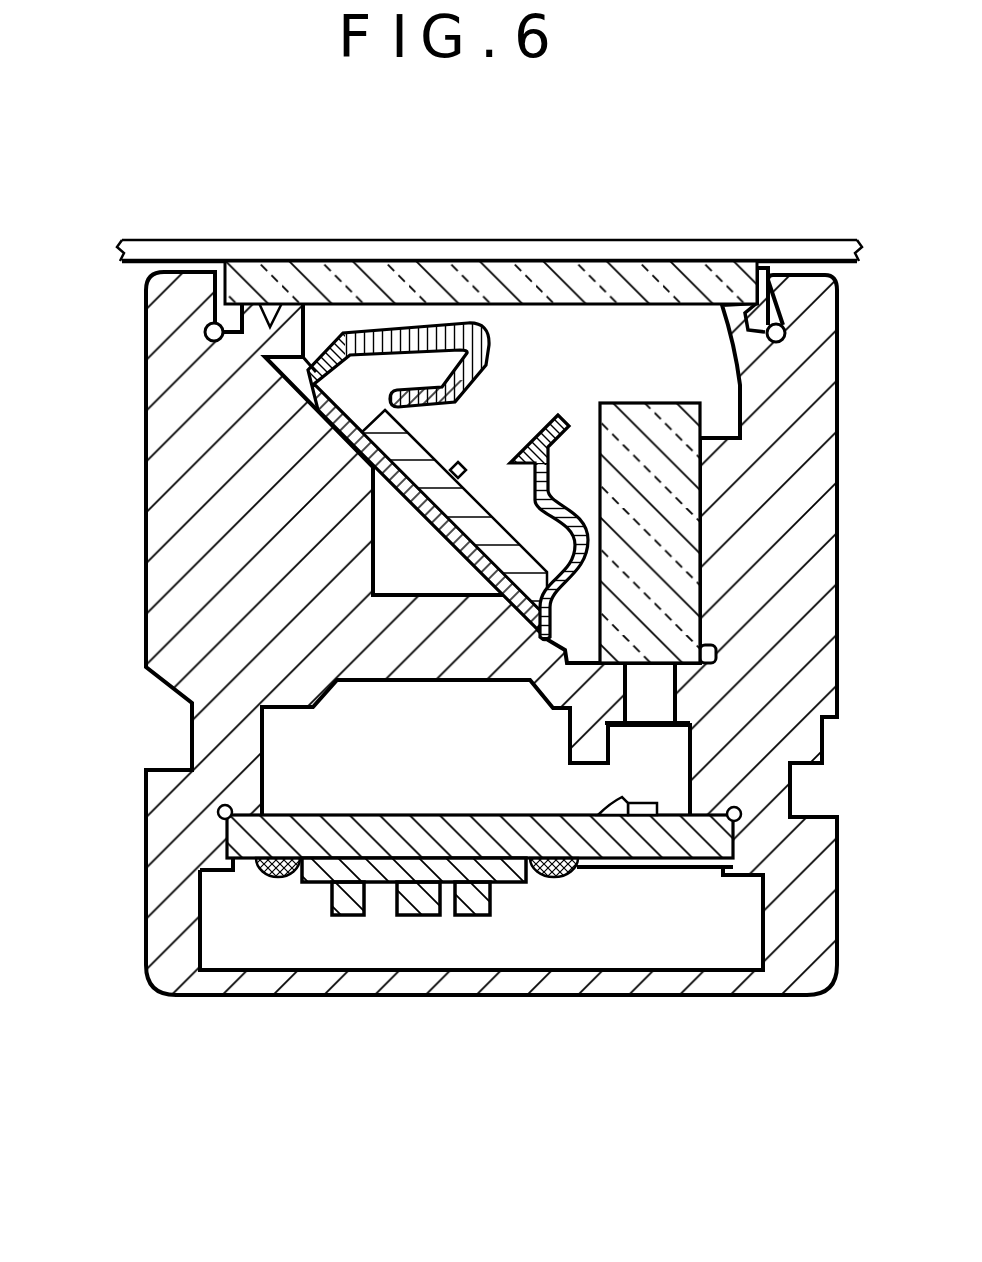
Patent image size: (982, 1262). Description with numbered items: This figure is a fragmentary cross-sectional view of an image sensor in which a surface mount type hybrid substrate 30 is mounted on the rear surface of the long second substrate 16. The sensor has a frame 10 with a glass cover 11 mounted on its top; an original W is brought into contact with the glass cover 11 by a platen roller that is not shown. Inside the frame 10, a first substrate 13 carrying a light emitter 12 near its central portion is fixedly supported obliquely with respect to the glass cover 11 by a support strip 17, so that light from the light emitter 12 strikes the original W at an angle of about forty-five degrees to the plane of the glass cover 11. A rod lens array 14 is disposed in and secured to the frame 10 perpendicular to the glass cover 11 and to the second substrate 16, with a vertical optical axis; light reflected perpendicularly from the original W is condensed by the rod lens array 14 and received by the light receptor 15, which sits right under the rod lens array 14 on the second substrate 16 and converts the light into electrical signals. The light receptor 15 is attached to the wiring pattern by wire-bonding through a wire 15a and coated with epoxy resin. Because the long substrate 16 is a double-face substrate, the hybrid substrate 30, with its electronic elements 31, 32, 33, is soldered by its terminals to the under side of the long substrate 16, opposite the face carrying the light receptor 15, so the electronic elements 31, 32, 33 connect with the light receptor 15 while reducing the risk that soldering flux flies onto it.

The frame 10 is at (800, 383).
The glass cover 11 is at (271, 292).
The original W is at (467, 257).
The light emitter 12 is at (464, 463).
The first substrate 13 is at (363, 397).
The rod lens array 14 is at (632, 437).
The light receptor 15 is at (662, 810).
The wire 15a is at (613, 800).
The second substrate (long substrate) 16 is at (467, 837).
The support strip 17 is at (337, 423).
The surface mount type hybrid substrate 30 is at (362, 868).
The electronic element 31 is at (345, 912).
The electronic element 32 is at (415, 913).
The electronic element 33 is at (478, 907).